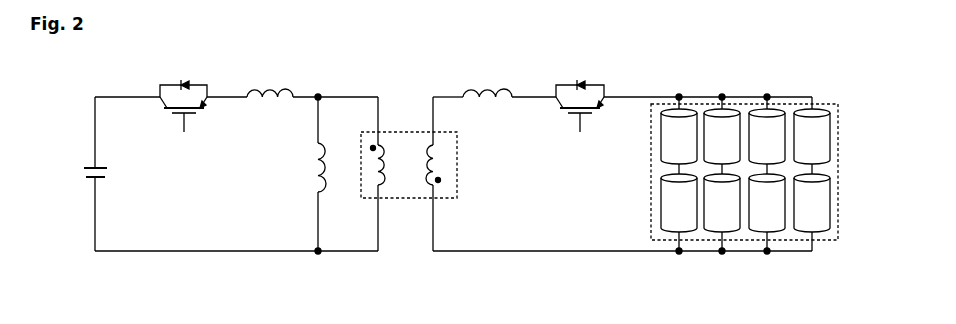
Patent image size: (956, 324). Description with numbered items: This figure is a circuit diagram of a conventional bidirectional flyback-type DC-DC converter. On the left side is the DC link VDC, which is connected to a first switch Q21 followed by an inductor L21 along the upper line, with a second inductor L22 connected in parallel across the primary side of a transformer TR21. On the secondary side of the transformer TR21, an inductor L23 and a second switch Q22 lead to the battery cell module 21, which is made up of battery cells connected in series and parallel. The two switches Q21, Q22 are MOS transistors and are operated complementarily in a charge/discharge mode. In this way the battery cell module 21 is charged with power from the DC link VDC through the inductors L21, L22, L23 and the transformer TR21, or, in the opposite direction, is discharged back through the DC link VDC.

The DC link VDC is at (71, 174).
The switch Q21 is at (172, 109).
The inductor L21 is at (270, 80).
The inductor L22 is at (304, 174).
The transformer TR21 is at (408, 198).
The inductor L23 is at (487, 80).
The switch Q22 is at (568, 109).
The battery cell module 21 is at (748, 240).